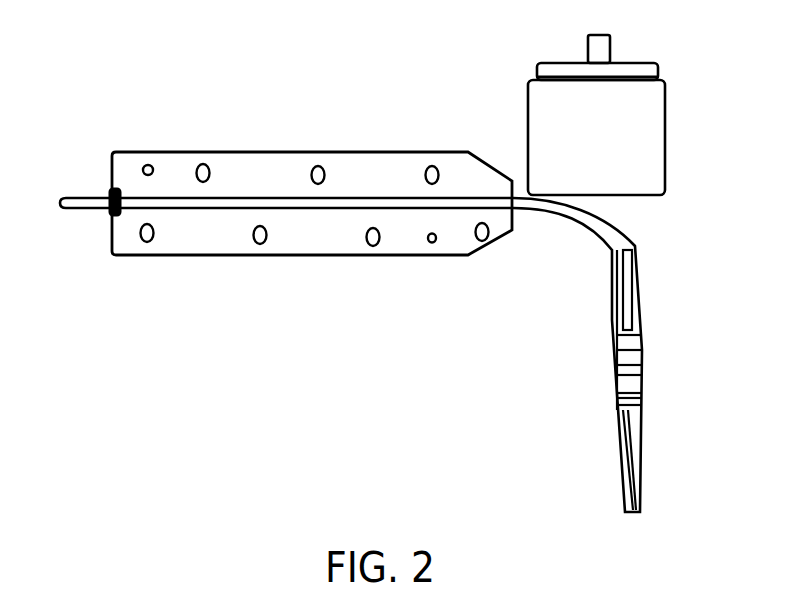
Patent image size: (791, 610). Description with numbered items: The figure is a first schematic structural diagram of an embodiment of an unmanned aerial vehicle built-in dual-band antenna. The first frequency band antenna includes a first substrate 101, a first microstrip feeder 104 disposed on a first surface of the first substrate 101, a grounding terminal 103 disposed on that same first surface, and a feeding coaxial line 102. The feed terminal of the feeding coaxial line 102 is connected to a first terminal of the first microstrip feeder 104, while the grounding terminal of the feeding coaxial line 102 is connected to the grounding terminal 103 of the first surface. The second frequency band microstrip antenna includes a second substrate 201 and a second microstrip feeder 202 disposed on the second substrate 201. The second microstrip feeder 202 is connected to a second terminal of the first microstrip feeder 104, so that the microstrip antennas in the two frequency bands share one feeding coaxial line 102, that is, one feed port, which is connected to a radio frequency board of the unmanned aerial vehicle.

The first substrate 101 is at (267, 166).
The feeding coaxial line 102 is at (87, 207).
The grounding terminal 103 is at (112, 190).
The first microstrip feeder 104 is at (287, 210).
The second substrate 201 is at (643, 417).
The second microstrip feeder 202 is at (640, 363).